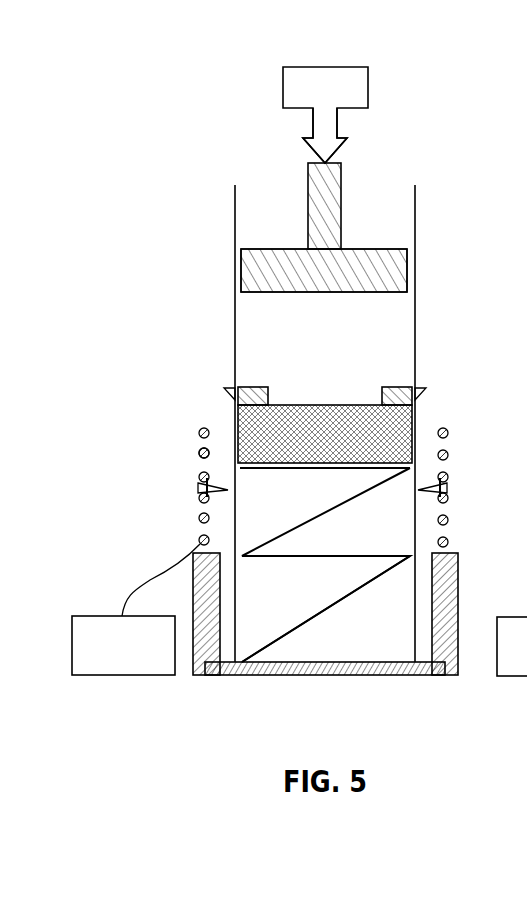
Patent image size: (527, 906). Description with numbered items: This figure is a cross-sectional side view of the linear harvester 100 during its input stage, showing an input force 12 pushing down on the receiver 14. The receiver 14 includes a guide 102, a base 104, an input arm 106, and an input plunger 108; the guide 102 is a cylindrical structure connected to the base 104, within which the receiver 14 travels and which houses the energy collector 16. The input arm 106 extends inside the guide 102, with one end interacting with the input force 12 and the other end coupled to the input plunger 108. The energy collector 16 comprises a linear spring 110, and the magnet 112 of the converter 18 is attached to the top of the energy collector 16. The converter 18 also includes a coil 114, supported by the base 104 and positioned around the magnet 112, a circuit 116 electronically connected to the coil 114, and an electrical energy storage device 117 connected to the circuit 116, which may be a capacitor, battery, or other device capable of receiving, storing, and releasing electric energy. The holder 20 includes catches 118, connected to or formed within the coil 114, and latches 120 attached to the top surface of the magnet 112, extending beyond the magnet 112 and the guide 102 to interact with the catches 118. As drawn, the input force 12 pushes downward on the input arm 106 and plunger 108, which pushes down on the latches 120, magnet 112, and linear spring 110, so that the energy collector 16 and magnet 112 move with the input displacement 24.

The linear harvester 100 is at (246, 55).
The input force 12 is at (343, 80).
The input displacement 24 is at (322, 124).
The receiver 14 is at (430, 223).
The input arm 106 is at (330, 190).
The guide 102 is at (417, 285).
The input plunger 108 is at (330, 293).
The latches 120 is at (420, 392).
The magnet 112 is at (240, 426).
The linear spring 110 is at (338, 602).
The energy collector 16 is at (396, 545).
The converter 18 is at (177, 499).
The holder 20 is at (458, 441).
The coil 114 is at (200, 452).
The catches 118 is at (448, 486).
The circuit 116 is at (150, 580).
The electrical energy storage device 117 is at (132, 661).
The base 104 is at (412, 676).